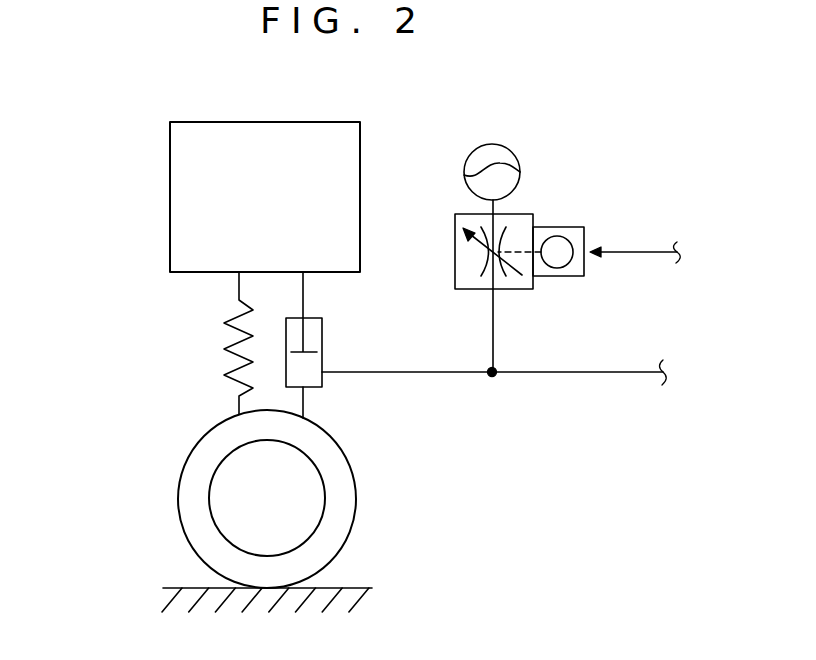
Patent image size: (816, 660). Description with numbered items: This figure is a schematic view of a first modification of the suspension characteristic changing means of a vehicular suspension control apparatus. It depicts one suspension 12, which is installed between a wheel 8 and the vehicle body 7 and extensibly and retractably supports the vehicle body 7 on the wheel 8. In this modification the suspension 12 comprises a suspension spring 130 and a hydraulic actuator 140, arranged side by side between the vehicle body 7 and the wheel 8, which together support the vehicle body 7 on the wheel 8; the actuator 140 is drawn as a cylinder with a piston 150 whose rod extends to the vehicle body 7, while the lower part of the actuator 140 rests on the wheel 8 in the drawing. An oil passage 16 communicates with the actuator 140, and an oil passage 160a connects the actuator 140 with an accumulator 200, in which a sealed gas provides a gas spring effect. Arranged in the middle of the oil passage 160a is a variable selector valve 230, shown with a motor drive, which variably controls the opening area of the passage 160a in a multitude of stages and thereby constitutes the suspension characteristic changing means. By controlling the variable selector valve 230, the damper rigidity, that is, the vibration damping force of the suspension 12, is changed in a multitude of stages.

The vehicle body 7 is at (170, 155).
The wheel 8 is at (185, 462).
The suspension 12 is at (142, 288).
The oil passage 16 is at (562, 374).
The suspension spring 130 is at (229, 358).
The hydraulic actuator 140 is at (310, 387).
The piston 150 is at (313, 366).
The oil passage 160a is at (490, 207).
The accumulator 200 is at (515, 158).
The variable selector valve 230 is at (523, 213).